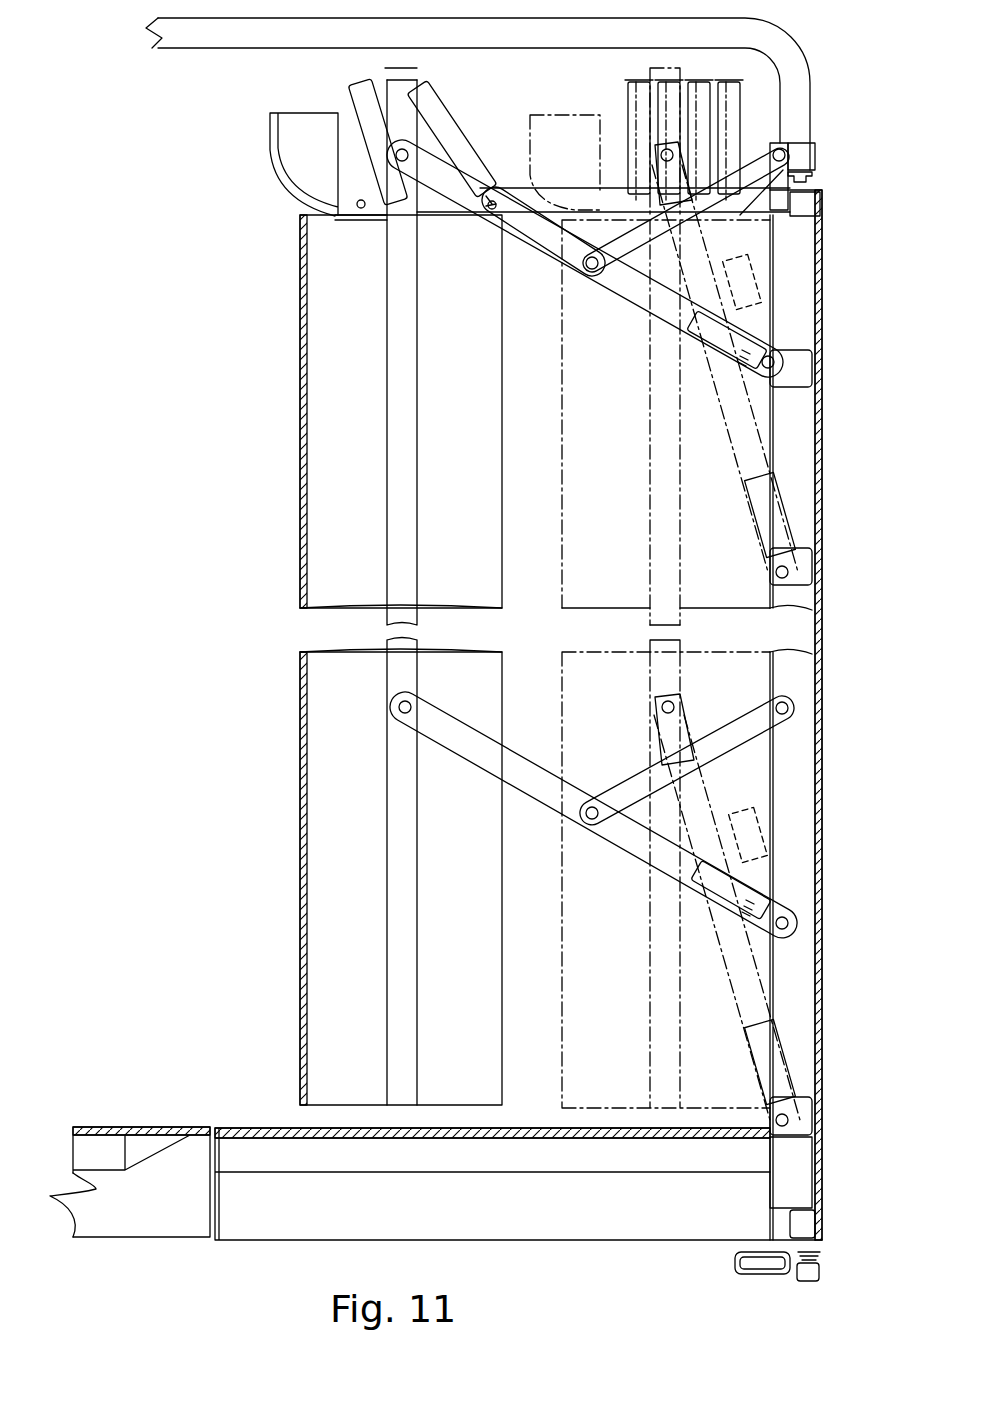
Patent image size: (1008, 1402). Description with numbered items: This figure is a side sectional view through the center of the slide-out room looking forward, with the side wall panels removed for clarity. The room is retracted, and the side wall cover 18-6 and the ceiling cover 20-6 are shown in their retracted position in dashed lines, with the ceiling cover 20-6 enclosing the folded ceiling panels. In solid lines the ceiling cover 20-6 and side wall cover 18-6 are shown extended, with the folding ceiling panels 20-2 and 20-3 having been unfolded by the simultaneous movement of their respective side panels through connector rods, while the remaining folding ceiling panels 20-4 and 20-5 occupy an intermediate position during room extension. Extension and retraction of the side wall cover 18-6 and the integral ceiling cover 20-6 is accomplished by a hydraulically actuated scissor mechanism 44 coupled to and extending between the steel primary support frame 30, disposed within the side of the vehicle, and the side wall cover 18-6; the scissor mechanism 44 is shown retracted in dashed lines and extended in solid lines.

The folding ceiling panel 20-2 is at (742, 108).
The folding ceiling panel 20-3 is at (522, 200).
The folding ceiling panel 20-4 is at (438, 103).
The folding ceiling panel 20-5 is at (378, 113).
The ceiling panel cover 20-6 is at (268, 155).
The primary support frame 30 is at (795, 290).
The scissor mechanism 44 is at (545, 250).
The side panel cover 18-6 is at (303, 396).